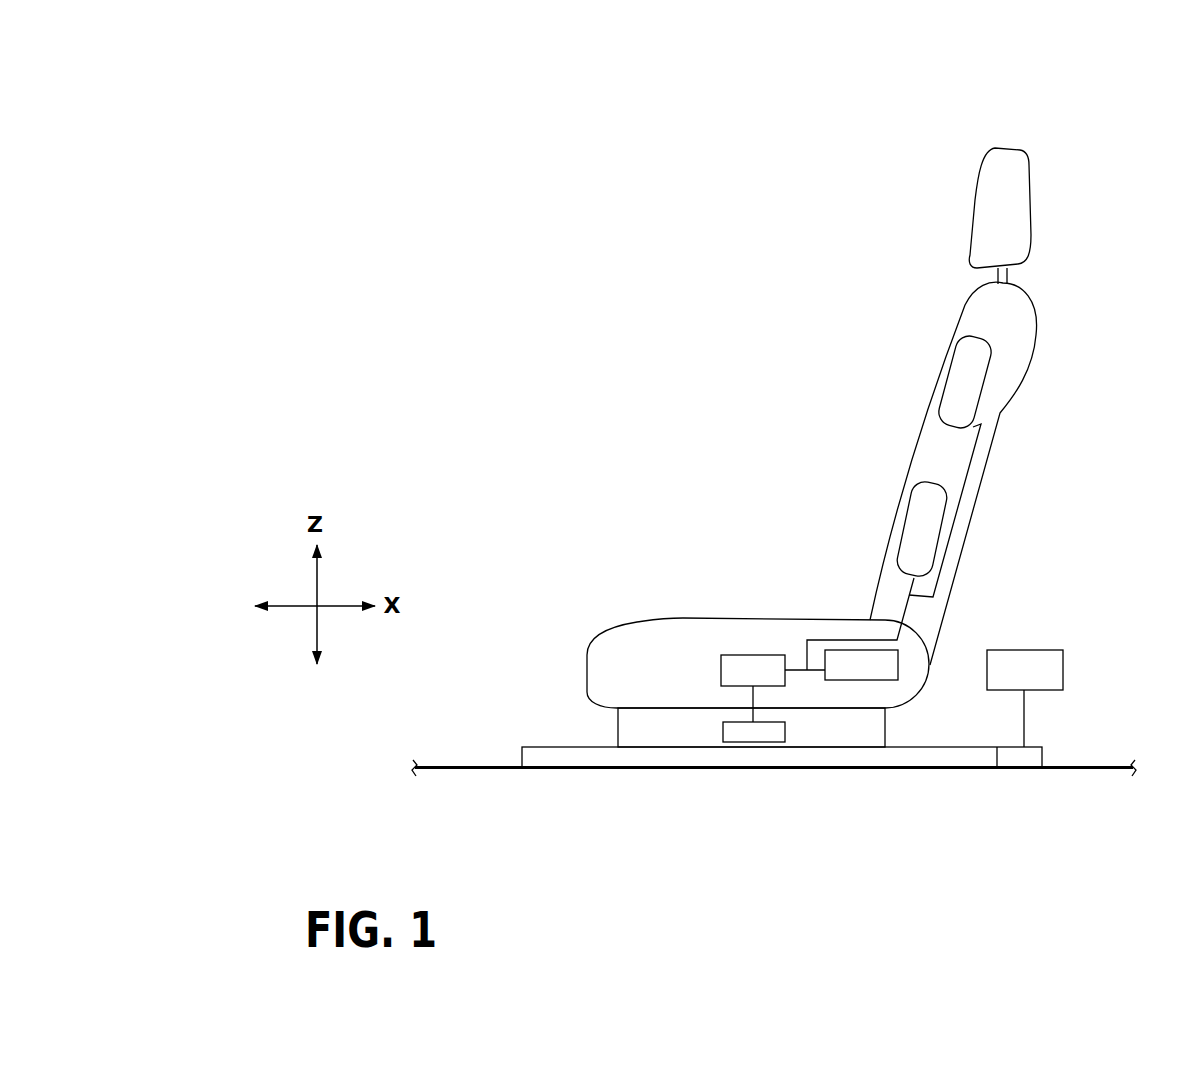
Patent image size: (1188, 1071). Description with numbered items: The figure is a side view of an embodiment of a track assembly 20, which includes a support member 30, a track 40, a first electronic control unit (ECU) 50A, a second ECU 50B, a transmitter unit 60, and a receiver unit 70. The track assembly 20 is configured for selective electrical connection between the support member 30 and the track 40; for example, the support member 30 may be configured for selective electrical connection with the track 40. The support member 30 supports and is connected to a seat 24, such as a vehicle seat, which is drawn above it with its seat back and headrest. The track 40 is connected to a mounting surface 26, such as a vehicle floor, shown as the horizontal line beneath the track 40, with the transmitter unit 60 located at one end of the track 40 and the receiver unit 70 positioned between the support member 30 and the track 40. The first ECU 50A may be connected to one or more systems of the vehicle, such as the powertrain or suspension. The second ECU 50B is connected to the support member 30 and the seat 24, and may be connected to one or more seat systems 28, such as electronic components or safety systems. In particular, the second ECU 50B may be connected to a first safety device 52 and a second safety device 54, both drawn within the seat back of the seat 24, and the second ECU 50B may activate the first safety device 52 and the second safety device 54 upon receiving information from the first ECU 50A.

The track assembly 20 is at (1092, 78).
The seat 24 is at (942, 406).
The mounting surface 26 is at (1082, 770).
The seat systems 28 is at (898, 667).
The support member 30 is at (615, 722).
The track 40 is at (775, 721).
The first electronic control unit 50A is at (1027, 650).
The second electronic control unit 50B is at (749, 655).
The first safety device 52 is at (990, 362).
The second safety device 54 is at (945, 512).
The transmitter unit 60 is at (1033, 748).
The receiver unit 70 is at (753, 735).